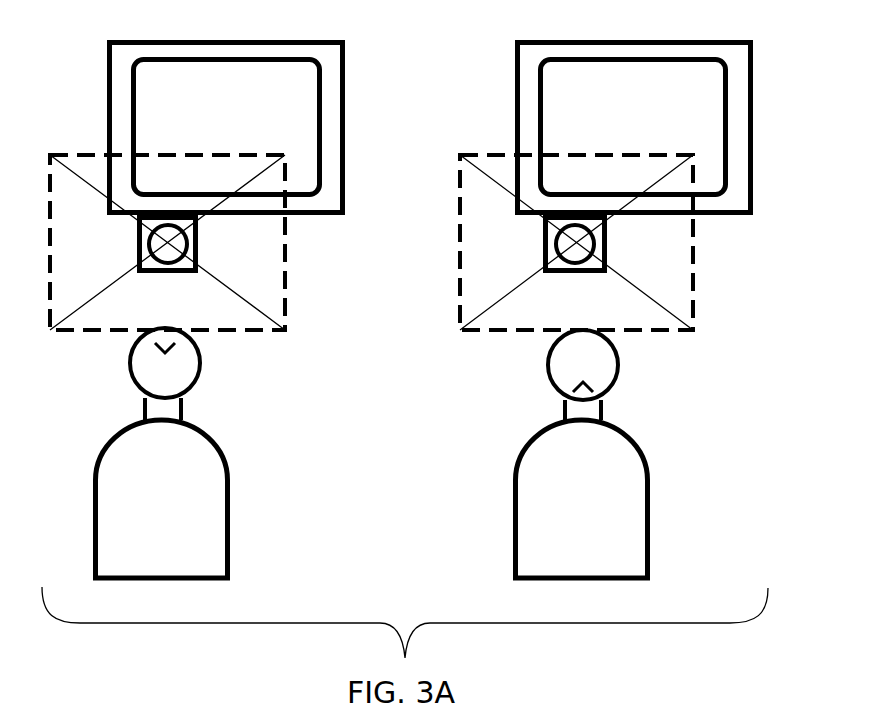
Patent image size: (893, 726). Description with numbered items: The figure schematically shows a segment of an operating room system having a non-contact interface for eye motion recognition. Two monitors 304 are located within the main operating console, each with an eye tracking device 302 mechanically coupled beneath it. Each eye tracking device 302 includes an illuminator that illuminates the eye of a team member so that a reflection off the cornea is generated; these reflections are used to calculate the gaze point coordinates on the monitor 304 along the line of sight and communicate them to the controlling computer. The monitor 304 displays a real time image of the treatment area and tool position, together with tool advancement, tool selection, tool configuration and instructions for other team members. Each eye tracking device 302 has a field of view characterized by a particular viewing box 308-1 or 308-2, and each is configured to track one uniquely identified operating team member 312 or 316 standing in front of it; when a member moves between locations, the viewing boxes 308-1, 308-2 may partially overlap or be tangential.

The monitor 304 is at (515, 98).
The eye tracking device 302 is at (199, 241).
The viewing box 308-1 is at (265, 285).
The viewing box 308-2 is at (667, 283).
The operating team member 312 is at (213, 517).
The operating team member 316 is at (547, 523).